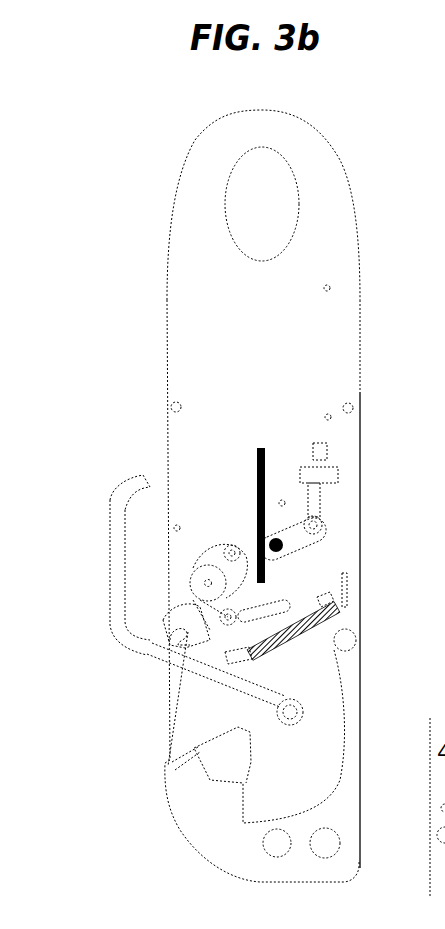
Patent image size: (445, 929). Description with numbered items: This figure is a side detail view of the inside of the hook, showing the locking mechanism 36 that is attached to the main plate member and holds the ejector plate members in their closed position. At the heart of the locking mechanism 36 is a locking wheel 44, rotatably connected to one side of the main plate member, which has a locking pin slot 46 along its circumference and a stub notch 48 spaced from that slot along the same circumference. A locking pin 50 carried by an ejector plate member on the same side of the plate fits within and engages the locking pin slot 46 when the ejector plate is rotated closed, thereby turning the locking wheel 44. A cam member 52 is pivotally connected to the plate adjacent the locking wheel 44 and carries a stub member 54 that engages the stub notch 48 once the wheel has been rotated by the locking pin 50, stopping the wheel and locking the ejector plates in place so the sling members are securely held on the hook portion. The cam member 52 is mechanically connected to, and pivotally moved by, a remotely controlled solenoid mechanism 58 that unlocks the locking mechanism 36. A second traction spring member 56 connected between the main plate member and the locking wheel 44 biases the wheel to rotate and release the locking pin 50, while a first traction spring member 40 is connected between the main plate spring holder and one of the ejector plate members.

The locking mechanism 36 is at (200, 515).
The first traction spring member 40 is at (302, 637).
The locking wheel 44 is at (213, 598).
The locking pin slot 46 is at (215, 612).
The stub notch 48 is at (217, 550).
The locking pin 50 is at (220, 607).
The cam member 52 is at (310, 547).
The stub member 54 is at (235, 551).
The second traction spring member 56 is at (266, 460).
The solenoid mechanism 58 is at (312, 497).